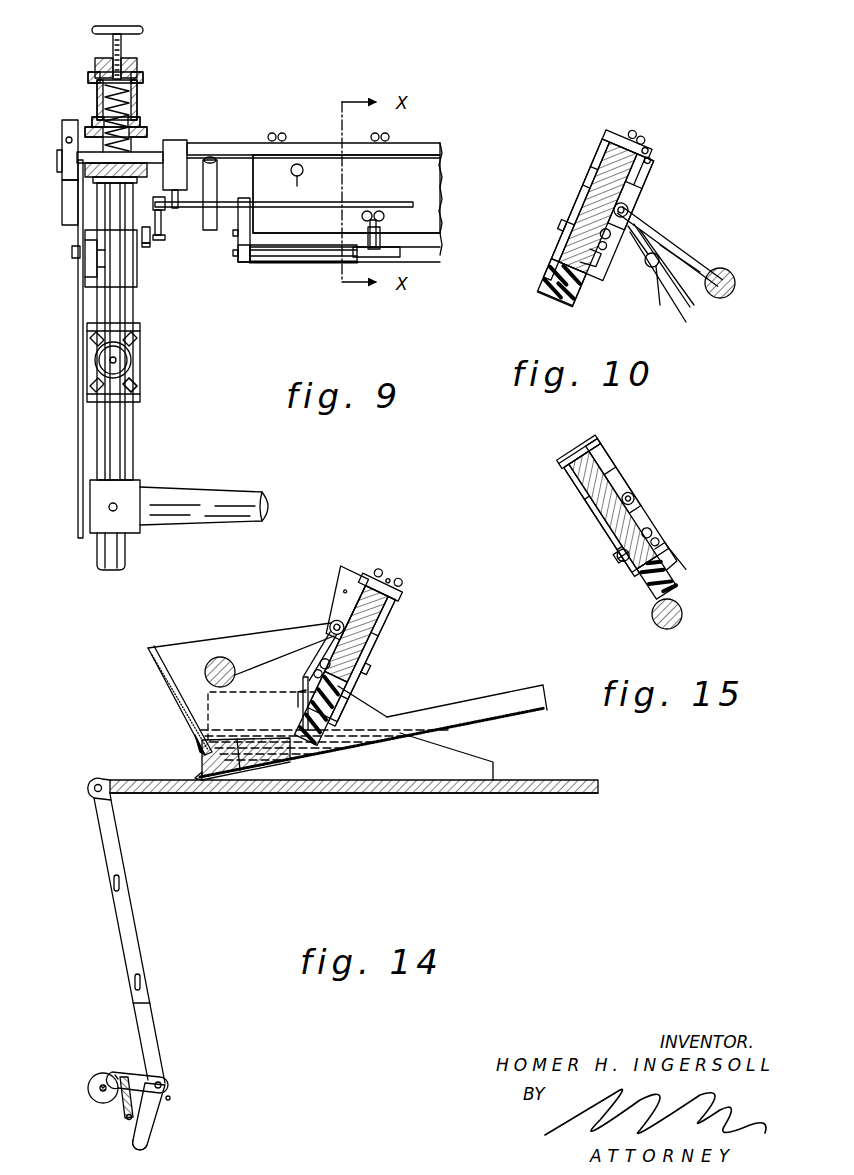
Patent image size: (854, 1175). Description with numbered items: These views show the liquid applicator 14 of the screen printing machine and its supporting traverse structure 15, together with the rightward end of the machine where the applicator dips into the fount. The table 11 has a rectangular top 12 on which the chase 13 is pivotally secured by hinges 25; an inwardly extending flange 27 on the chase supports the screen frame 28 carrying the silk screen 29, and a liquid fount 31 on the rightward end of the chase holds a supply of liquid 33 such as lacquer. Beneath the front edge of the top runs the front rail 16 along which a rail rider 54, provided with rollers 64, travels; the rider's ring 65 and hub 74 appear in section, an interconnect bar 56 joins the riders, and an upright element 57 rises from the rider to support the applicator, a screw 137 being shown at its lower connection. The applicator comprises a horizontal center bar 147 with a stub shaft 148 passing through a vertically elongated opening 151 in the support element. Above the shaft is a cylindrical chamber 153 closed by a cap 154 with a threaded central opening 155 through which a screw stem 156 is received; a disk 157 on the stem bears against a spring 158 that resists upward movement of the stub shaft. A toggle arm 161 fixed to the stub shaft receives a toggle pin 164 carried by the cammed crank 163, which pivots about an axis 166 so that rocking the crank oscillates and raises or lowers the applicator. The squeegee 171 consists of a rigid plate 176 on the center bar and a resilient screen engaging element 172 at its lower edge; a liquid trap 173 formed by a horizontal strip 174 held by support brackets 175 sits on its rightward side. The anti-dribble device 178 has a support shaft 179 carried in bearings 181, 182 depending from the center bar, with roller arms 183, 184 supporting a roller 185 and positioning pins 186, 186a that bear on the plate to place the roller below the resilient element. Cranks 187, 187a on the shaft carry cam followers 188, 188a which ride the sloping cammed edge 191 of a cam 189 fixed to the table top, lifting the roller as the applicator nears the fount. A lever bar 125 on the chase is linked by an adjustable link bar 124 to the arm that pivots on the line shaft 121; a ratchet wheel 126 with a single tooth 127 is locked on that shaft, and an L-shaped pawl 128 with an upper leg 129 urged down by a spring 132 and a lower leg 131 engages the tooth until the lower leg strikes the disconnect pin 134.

In FIG. 9, the screw stem 156 is at (138, 31).
In FIG. 9, the threaded central opening 155 is at (108, 53).
In FIG. 9, the cap 154 is at (137, 66).
In FIG. 9, the disk 157 is at (101, 79).
In FIG. 9, the cylindrical chamber 153 is at (137, 101).
In FIG. 9, the spring 158 is at (108, 109).
In FIG. 9, the vertically elongated opening 151 is at (143, 136).
In FIG. 9, the stub shaft 148 is at (147, 158).
In FIG. 9, the toggle arm 161 is at (62, 149).
In FIG. 9, the toggle pin 164 is at (68, 187).
In FIG. 9, the pivot axis 166 is at (72, 253).
In FIG. 9, the cammed crank 163 is at (78, 440).
In FIG. 9, the rollers 64 is at (140, 338).
In FIG. 9, the ring 65 is at (107, 357).
In FIG. 9, the front rail 16 is at (135, 362).
In FIG. 9, the hub 74 is at (108, 363).
In FIG. 9, the rail rider 54 is at (140, 385).
In FIG. 9, the upright element 57 is at (118, 447).
In FIG. 9, the screw 137 is at (108, 510).
In FIG. 9, the interconnect bar 56 is at (212, 497).
In FIG. 9, the center bar 147 is at (418, 148).
In FIG. 10, the center bar 147 is at (645, 146).
In FIG. 15, the center bar 147 is at (578, 455).
In FIG. 14, the center bar 147 is at (405, 600).
In FIG. 9, the liquid applicator 14 is at (302, 124).
In FIG. 10, the liquid applicator 14 is at (585, 167).
In FIG. 15, the liquid applicator 14 is at (636, 473).
In FIG. 14, the liquid applicator 14 is at (380, 637).
In FIG. 9, the rigid plate 176 is at (428, 195).
In FIG. 10, the rigid plate 176 is at (600, 190).
In FIG. 15, the rigid plate 176 is at (590, 500).
In FIG. 14, the rigid plate 176 is at (354, 665).
In FIG. 9, the squeegee 171 is at (442, 205).
In FIG. 10, the squeegee 171 is at (579, 199).
In FIG. 15, the squeegee 171 is at (594, 526).
In FIG. 14, the squeegee 171 is at (368, 656).
In FIG. 9, the resilient screen engaging element 172 is at (428, 263).
In FIG. 10, the resilient screen engaging element 172 is at (545, 275).
In FIG. 15, the resilient screen engaging element 172 is at (648, 585).
In FIG. 14, the resilient screen engaging element 172 is at (342, 710).
In FIG. 9, the liquid trap 173 is at (407, 259).
In FIG. 10, the liquid trap 173 is at (590, 270).
In FIG. 15, the liquid trap 173 is at (672, 556).
In FIG. 14, the liquid trap 173 is at (299, 703).
In FIG. 9, the horizontal strip 174 is at (372, 251).
In FIG. 10, the horizontal strip 174 is at (571, 291).
In FIG. 14, the horizontal strip 174 is at (302, 722).
In FIG. 9, the support brackets 175 is at (382, 222).
In FIG. 10, the support brackets 175 is at (603, 245).
In FIG. 15, the support brackets 175 is at (647, 541).
In FIG. 14, the support brackets 175 is at (322, 669).
In FIG. 9, the support shaft 179 is at (360, 205).
In FIG. 10, the support shaft 179 is at (633, 208).
In FIG. 15, the support shaft 179 is at (636, 498).
In FIG. 14, the support shaft 179 is at (331, 625).
In FIG. 9, the roller 185 is at (285, 263).
In FIG. 10, the roller 185 is at (735, 281).
In FIG. 15, the roller 185 is at (683, 619).
In FIG. 14, the roller 185 is at (205, 669).
In FIG. 9, the roller arm 183 is at (251, 228).
In FIG. 14, the roller arm 183 is at (300, 690).
In FIG. 9, the positioning pin 186 is at (236, 242).
In FIG. 9, the bearing 181 is at (177, 210).
In FIG. 14, the bearing 181 is at (342, 618).
In FIG. 9, the crank 187 is at (160, 216).
In FIG. 9, the cam follower 188 is at (146, 244).
In FIG. 9, the traverse structure 15 is at (151, 263).
In FIG. 9, the anti-dribble device 178 is at (250, 270).
In FIG. 10, the anti-dribble device 178 is at (662, 226).
In FIG. 14, the anti-dribble device 178 is at (247, 650).
In FIG. 10, the bearing 182 is at (636, 189).
In FIG. 15, the bearing 182 is at (612, 475).
In FIG. 10, the roller arm 184 is at (700, 266).
In FIG. 15, the roller arm 184 is at (672, 568).
In FIG. 10, the crank 187a is at (657, 304).
In FIG. 10, the positioning pin 186a is at (692, 306).
In FIG. 10, the cam follower 188a is at (686, 322).
In FIG. 15, the cam follower 188a is at (618, 572).
In FIG. 14, the liquid fount 31 is at (165, 650).
In FIG. 14, the liquid 33 is at (215, 722).
In FIG. 14, the cammed edge 191 is at (392, 712).
In FIG. 14, the screen frame 28 is at (500, 696).
In FIG. 14, the silk screen 29 is at (522, 712).
In FIG. 14, the chase 13 is at (232, 770).
In FIG. 14, the hinges 25 is at (197, 776).
In FIG. 14, the inwardly extending flange 27 is at (262, 766).
In FIG. 14, the table top 12 is at (575, 788).
In FIG. 14, the cam 189 is at (440, 773).
In FIG. 14, the table 11 is at (549, 798).
In FIG. 14, the lever bar 125 is at (145, 770).
In FIG. 14, the adjustable link bar 124 is at (125, 930).
In FIG. 14, the upper leg 129 is at (150, 1080).
In FIG. 14, the L-shaped pawl 128 is at (162, 1115).
In FIG. 14, the lower leg 131 is at (145, 1128).
In FIG. 14, the ratchet wheel 126 is at (90, 1087).
In FIG. 14, the line shaft 121 is at (100, 1091).
In FIG. 14, the tooth 127 is at (115, 1075).
In FIG. 14, the spring 132 is at (128, 1078).
In FIG. 14, the disconnect pin 134 is at (172, 1097).